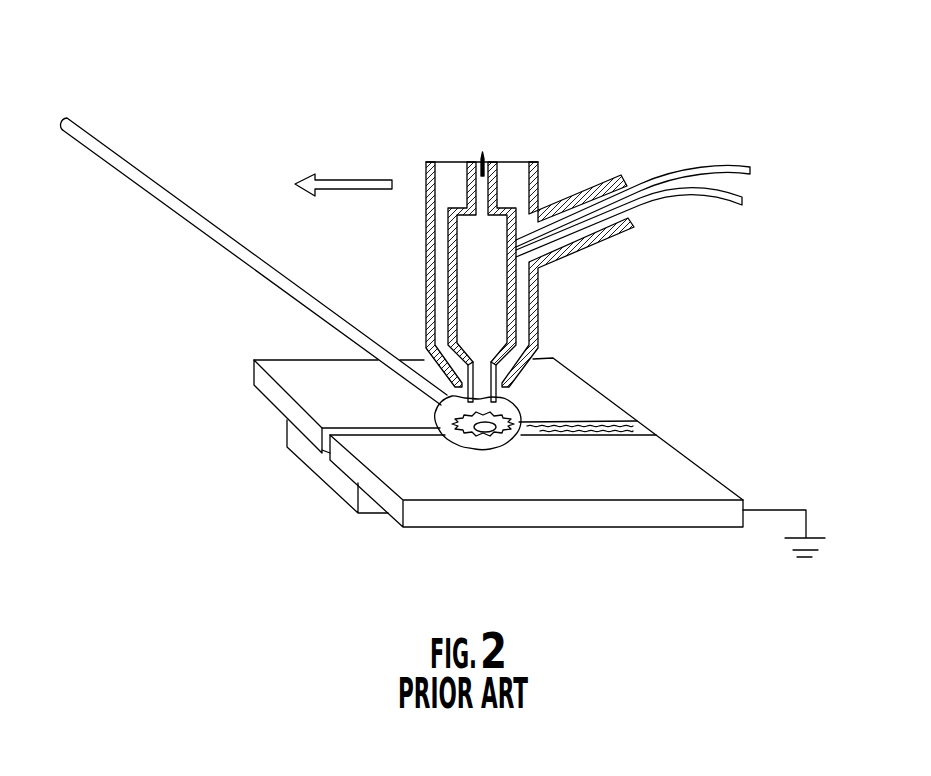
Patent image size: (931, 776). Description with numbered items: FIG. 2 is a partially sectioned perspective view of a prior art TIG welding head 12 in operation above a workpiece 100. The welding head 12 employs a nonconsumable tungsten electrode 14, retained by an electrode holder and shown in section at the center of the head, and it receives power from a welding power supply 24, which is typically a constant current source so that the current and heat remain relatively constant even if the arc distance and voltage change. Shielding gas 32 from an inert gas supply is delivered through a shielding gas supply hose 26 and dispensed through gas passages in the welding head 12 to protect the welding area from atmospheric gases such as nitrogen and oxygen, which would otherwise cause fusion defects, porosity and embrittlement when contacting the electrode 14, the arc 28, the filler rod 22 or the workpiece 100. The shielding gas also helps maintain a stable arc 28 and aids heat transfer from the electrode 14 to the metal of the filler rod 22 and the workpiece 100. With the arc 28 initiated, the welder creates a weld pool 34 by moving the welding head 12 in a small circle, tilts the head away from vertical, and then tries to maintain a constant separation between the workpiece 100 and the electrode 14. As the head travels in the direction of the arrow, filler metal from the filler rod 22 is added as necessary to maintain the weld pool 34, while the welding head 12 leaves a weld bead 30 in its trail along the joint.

The welding head 12 is at (497, 163).
The nonconsumable tungsten electrode 14 is at (504, 388).
The filler rod 22 is at (135, 167).
The welding power supply 24 is at (749, 165).
The shielding gas supply hose 26 is at (733, 203).
The arc 28 is at (455, 440).
The weld bead 30 is at (642, 422).
The shielding gas 32 is at (575, 431).
The weld pool 34 is at (497, 436).
The workpiece 100 is at (500, 528).